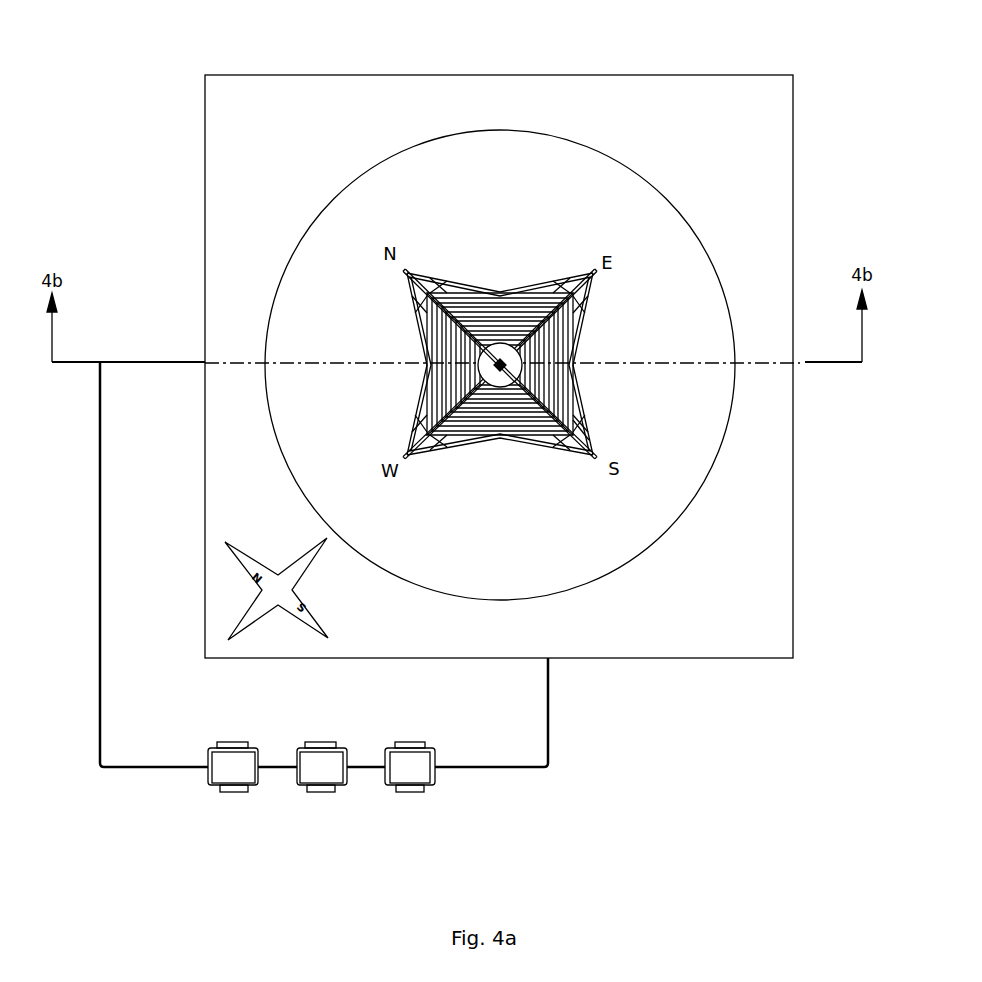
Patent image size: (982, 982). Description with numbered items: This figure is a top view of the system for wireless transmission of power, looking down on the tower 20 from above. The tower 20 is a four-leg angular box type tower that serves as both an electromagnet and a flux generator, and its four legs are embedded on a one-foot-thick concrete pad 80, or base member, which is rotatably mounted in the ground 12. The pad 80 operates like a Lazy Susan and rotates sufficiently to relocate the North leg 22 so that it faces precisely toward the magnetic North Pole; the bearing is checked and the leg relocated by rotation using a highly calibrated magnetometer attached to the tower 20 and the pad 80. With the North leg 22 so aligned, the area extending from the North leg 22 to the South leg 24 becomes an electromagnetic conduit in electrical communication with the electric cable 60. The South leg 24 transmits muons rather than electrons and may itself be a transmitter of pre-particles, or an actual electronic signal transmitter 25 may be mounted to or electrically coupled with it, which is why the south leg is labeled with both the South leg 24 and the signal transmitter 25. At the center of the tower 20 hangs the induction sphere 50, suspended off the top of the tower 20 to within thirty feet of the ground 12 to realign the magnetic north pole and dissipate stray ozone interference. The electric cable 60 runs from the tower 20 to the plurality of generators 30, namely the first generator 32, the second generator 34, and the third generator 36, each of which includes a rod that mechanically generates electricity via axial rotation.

The ground 12 is at (678, 82).
The tower 20 is at (662, 363).
The North leg 22 is at (413, 270).
The South leg 24 is at (590, 457).
The signal transmitter 25 is at (587, 430).
The plurality of generators 30 is at (378, 800).
The first generator 32 is at (228, 775).
The second generator 34 is at (320, 775).
The third generator 36 is at (407, 772).
The induction sphere 50 is at (502, 380).
The electric cable 60 is at (98, 590).
The concrete pad 80 is at (533, 148).